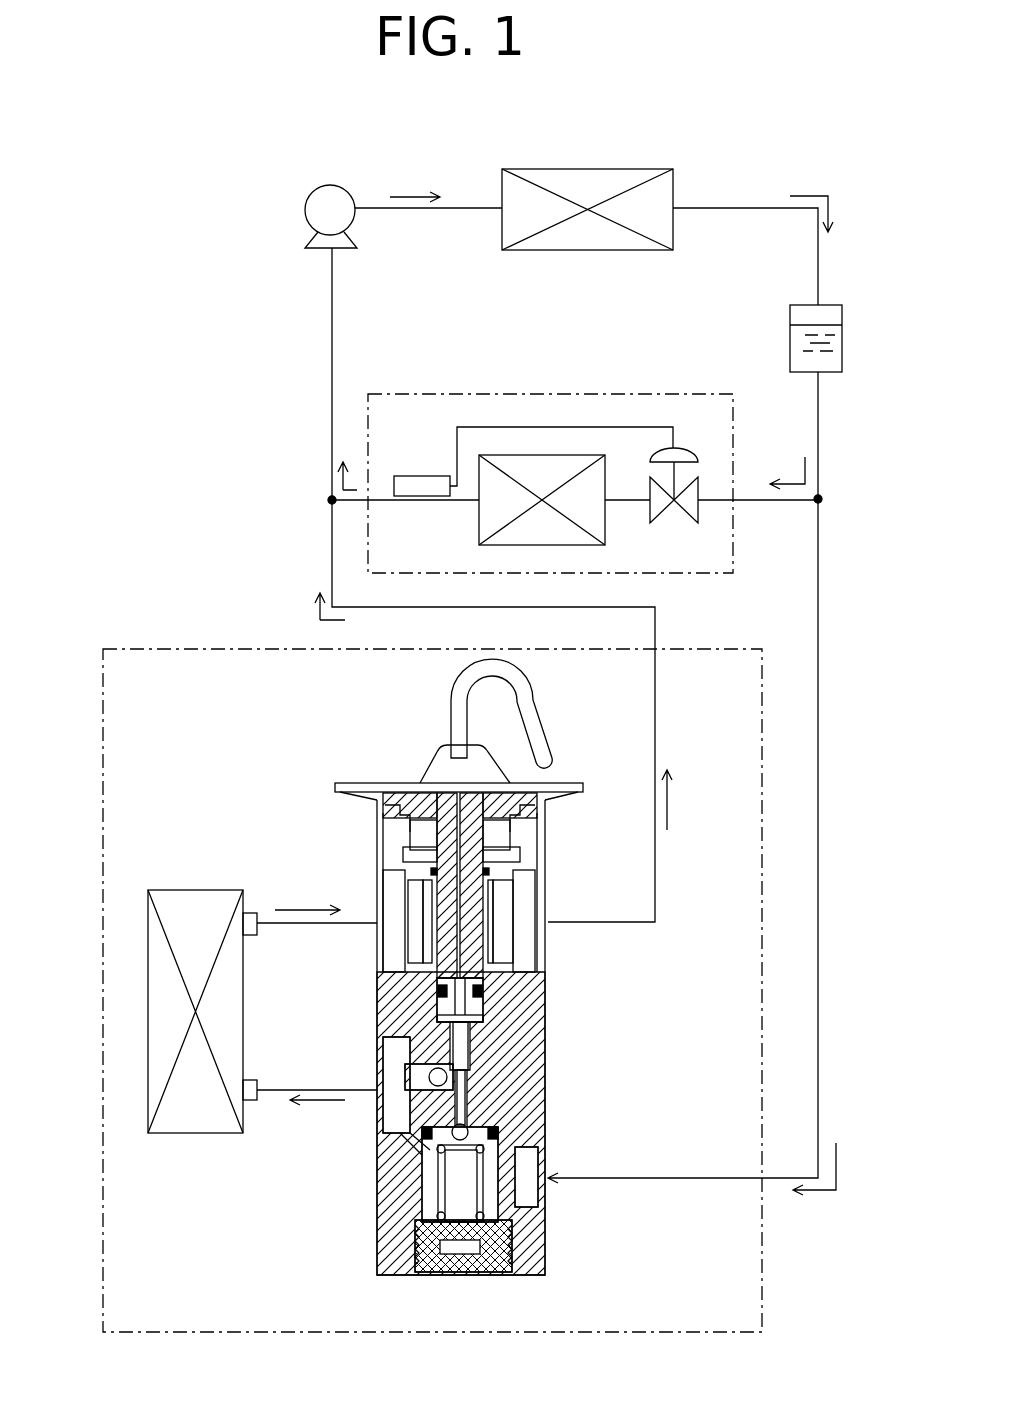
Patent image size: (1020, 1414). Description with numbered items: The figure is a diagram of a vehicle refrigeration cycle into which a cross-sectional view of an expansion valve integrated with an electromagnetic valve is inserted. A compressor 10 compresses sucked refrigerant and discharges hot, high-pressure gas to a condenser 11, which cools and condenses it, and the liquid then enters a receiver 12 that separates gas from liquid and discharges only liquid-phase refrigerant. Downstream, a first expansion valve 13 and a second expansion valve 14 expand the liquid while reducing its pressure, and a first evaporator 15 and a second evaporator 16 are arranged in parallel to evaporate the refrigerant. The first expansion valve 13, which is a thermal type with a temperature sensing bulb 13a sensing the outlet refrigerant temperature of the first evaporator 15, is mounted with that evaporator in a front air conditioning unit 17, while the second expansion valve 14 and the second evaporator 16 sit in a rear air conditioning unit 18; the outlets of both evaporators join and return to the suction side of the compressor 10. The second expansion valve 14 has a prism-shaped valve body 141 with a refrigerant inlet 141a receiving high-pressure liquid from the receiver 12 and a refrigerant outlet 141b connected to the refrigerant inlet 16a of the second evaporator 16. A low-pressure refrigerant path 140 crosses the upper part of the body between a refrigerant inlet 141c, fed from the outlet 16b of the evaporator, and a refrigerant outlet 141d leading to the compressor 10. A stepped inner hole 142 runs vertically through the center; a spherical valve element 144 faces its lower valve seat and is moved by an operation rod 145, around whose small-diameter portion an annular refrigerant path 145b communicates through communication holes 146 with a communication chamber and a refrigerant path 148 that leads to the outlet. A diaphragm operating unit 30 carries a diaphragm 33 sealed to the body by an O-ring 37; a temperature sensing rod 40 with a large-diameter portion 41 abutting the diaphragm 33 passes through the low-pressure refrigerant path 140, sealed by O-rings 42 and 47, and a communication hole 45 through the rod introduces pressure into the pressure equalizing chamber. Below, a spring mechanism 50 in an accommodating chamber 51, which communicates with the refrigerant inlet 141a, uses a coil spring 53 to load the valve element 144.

The compressor 10 is at (314, 208).
The condenser 11 is at (590, 170).
The receiver 12 is at (800, 304).
The first expansion valve 13 is at (690, 448).
The temperature sensing bulb 13a is at (415, 476).
The second expansion valve 14 is at (571, 976).
The first evaporator 15 is at (547, 455).
The second evaporator 16 is at (184, 1135).
The refrigerant inlet of the evaporator 16a is at (248, 1105).
The outlet of the evaporator 16b is at (249, 910).
The front air conditioning unit 17 is at (382, 395).
The rear air conditioning unit 18 is at (192, 650).
The diaphragm operating unit 30 is at (410, 741).
The diaphragm 33 is at (442, 772).
The rubber O-ring 37 is at (545, 812).
The temperature sensing rod 40 is at (545, 870).
The large-diameter portion 41 is at (412, 788).
The rubber O-ring 42 is at (545, 842).
The communication hole 45 is at (505, 800).
The rubber O-ring 47 is at (545, 993).
The spring mechanism 50 is at (545, 1225).
The accommodating chamber 51 is at (410, 1195).
The coil spring 53 is at (458, 1212).
The low-pressure refrigerant path 140 is at (414, 894).
The valve body 141 is at (545, 1055).
The refrigerant inlet 141a is at (548, 1200).
The refrigerant outlet 141b is at (395, 1128).
The refrigerant inlet 141c is at (378, 960).
The refrigerant outlet 141d is at (545, 897).
The stepped inner hole 142 is at (545, 1008).
The spherical valve element 144 is at (392, 1160).
The operation rod 145 is at (412, 1022).
The annular refrigerant path 145b is at (548, 1096).
The communication holes 146 is at (545, 1138).
The refrigerant path 148 is at (422, 1076).